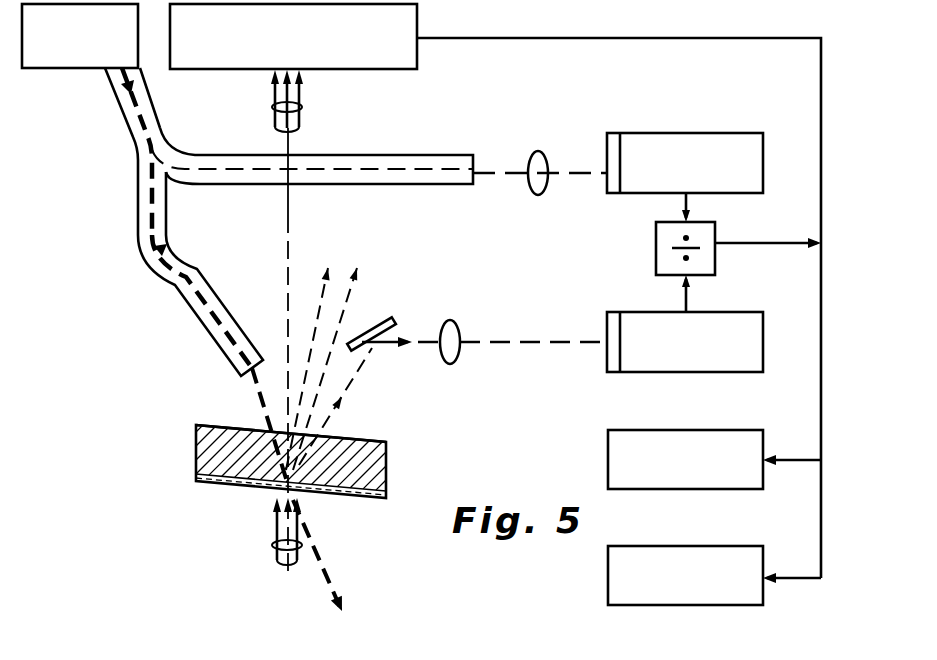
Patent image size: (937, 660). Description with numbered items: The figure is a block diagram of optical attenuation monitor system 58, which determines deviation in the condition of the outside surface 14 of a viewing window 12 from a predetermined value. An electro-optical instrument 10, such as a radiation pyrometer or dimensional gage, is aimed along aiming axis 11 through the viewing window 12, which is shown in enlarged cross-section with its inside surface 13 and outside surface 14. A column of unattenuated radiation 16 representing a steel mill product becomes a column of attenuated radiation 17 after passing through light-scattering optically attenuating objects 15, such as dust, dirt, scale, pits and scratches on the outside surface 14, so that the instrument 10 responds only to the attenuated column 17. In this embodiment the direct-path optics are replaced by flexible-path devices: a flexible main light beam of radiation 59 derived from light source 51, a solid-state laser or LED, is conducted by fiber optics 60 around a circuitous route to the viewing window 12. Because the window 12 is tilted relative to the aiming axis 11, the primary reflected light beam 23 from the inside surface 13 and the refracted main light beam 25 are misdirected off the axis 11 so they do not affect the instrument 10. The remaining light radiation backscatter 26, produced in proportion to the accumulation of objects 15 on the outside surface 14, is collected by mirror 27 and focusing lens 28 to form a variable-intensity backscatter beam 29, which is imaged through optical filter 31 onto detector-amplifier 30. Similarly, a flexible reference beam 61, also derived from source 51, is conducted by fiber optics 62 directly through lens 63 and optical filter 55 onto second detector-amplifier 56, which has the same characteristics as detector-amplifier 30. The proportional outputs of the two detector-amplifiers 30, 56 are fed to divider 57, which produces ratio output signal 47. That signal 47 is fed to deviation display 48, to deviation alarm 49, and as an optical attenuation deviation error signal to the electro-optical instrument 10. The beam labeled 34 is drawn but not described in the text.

The electro-optical instrument 10 is at (366, 70).
The aiming axis 11 is at (290, 245).
The viewing window 12 is at (222, 462).
The inside surface 13 is at (245, 425).
The outside surface 14 is at (375, 482).
The light-scattering optically attenuating objects 15 is at (322, 497).
The column of unattenuated radiation 16 is at (272, 545).
The column of attenuated radiation 17 is at (300, 105).
The primary reflected light beam 23 is at (312, 318).
The refracted main light beam of radiation 25 is at (335, 592).
The light radiation backscatter 26 is at (350, 390).
The mirror 27 is at (385, 322).
The focusing lens 28 is at (452, 323).
The backscatter beam 29 is at (492, 341).
The detector-amplifier 30 is at (700, 312).
The optical filter 31 is at (606, 332).
The reflected beam 34 is at (350, 305).
The ratio output signal 47 is at (745, 243).
The deviation display 48 is at (700, 430).
The deviation alarm 49 is at (690, 546).
The light source 51 is at (68, 70).
The optical filter 55 is at (607, 150).
The second detector-amplifier 56 is at (645, 133).
The divider 57 is at (656, 243).
The optical attenuation monitor system 58 is at (563, 82).
The flexible main light beam of radiation 59 is at (136, 228).
The fiber optics 60 is at (176, 285).
The flexible reference beam 61 is at (392, 170).
The fiber optics 62 is at (335, 155).
The lens 63 is at (541, 153).